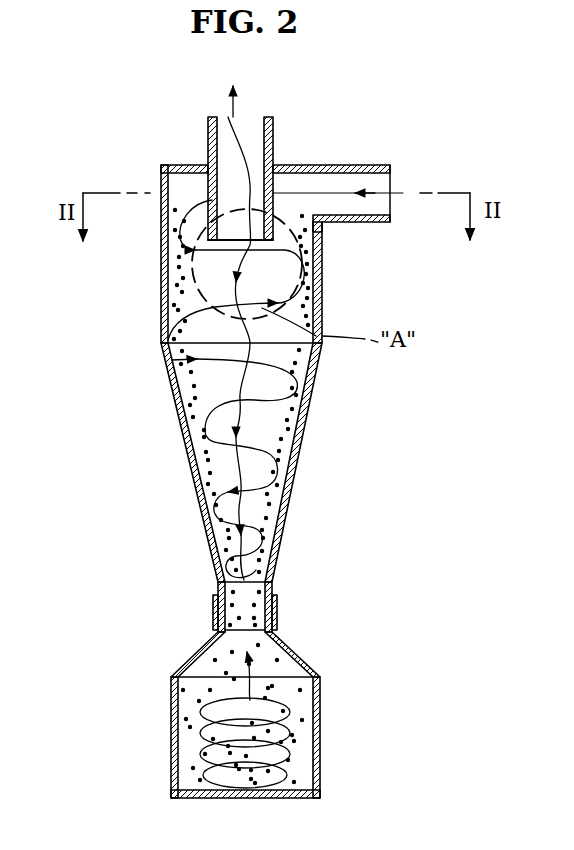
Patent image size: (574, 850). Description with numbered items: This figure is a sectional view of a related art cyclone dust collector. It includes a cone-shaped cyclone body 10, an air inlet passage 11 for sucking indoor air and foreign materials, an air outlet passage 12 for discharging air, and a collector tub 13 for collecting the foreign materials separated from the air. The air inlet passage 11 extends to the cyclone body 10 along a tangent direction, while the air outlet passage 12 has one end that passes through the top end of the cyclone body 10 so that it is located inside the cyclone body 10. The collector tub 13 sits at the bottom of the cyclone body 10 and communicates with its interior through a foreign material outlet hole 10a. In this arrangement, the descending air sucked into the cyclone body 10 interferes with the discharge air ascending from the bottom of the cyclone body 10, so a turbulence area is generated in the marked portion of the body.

The cyclone body 10 is at (160, 305).
The foreign material outlet hole 10a is at (245, 608).
The air inlet passage 11 is at (355, 222).
The air outlet passage 12 is at (273, 138).
The collector tub 13 is at (320, 734).